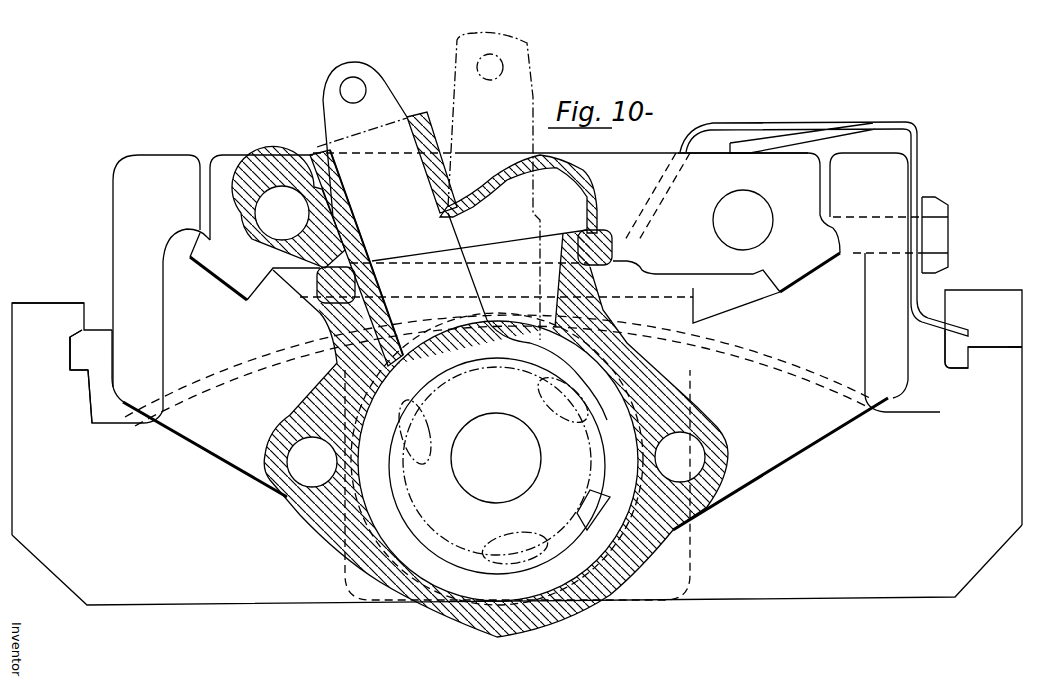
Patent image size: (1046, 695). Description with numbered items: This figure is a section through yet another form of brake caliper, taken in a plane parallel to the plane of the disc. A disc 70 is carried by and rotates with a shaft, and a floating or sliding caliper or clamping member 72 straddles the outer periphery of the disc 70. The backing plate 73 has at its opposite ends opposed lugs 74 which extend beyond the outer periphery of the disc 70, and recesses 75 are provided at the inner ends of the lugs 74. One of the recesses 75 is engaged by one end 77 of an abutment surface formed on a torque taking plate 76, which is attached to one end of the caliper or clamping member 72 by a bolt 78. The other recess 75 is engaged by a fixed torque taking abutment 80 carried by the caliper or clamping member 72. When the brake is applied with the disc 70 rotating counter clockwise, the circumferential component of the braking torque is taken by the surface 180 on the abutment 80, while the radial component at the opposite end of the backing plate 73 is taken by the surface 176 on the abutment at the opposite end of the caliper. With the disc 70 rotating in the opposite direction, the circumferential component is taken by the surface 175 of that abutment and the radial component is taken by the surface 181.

The disc 70 is at (890, 396).
The floating or sliding caliper or clamping member 72 is at (890, 263).
The backing plate 73 is at (977, 543).
The lugs 74 is at (1002, 369).
The recesses 75 is at (980, 337).
The torque taking plate 76 is at (917, 143).
The end of abutment surface 77 is at (940, 315).
The bolt 78 is at (930, 208).
The fixed torque taking abutment 80 is at (78, 352).
The surface 175 is at (1027, 337).
The surface 176 is at (953, 370).
The surface 180 is at (70, 350).
The surface 181 is at (78, 377).